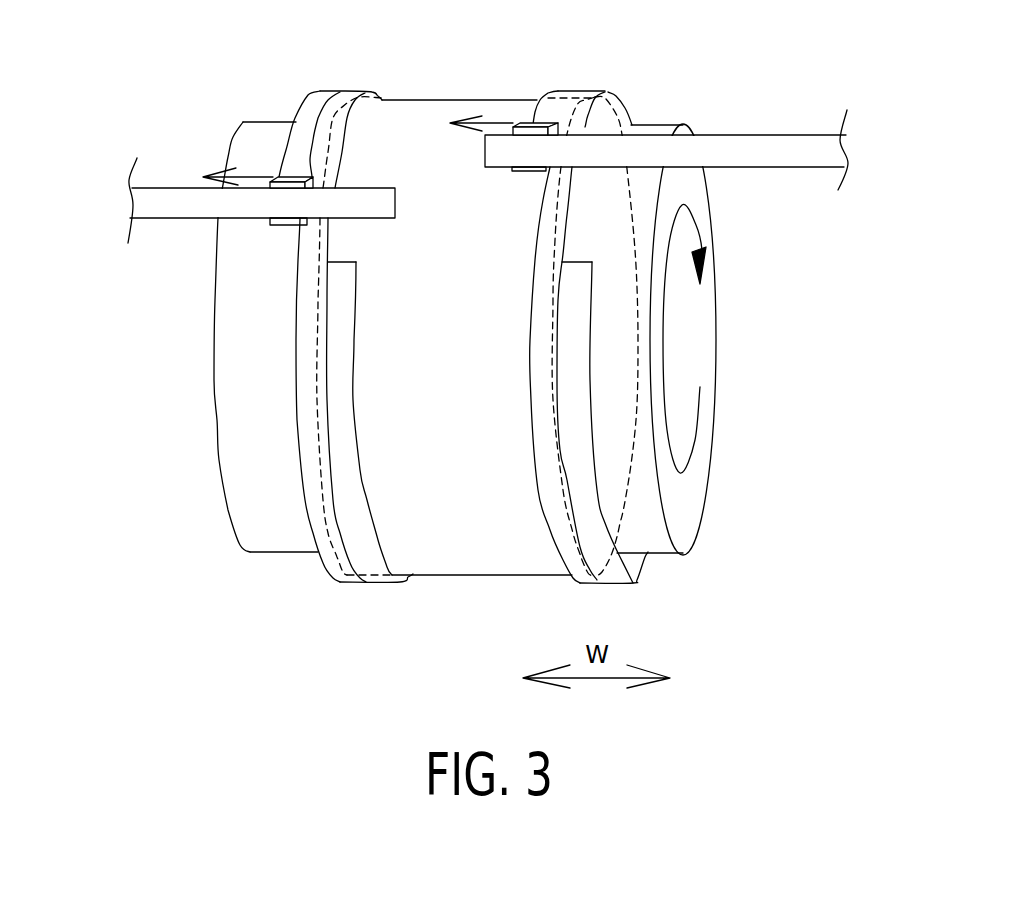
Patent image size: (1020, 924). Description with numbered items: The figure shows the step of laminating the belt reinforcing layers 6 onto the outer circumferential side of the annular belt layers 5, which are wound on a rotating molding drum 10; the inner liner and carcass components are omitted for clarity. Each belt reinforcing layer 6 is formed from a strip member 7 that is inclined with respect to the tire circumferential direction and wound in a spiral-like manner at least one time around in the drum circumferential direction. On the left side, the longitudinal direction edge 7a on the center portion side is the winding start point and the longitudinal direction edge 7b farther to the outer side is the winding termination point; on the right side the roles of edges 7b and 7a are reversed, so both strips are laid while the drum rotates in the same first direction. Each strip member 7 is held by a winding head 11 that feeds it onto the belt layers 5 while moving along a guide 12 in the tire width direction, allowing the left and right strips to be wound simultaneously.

The belt layer 5 is at (440, 104).
The belt reinforcing layer 6 is at (297, 408).
The strip member 7 is at (477, 336).
The longitudinal direction edge 7a is at (346, 262).
The longitudinal direction edge 7b is at (582, 261).
The molding drum 10 is at (218, 350).
The winding head 11 is at (295, 172).
The guide 12 is at (180, 197).